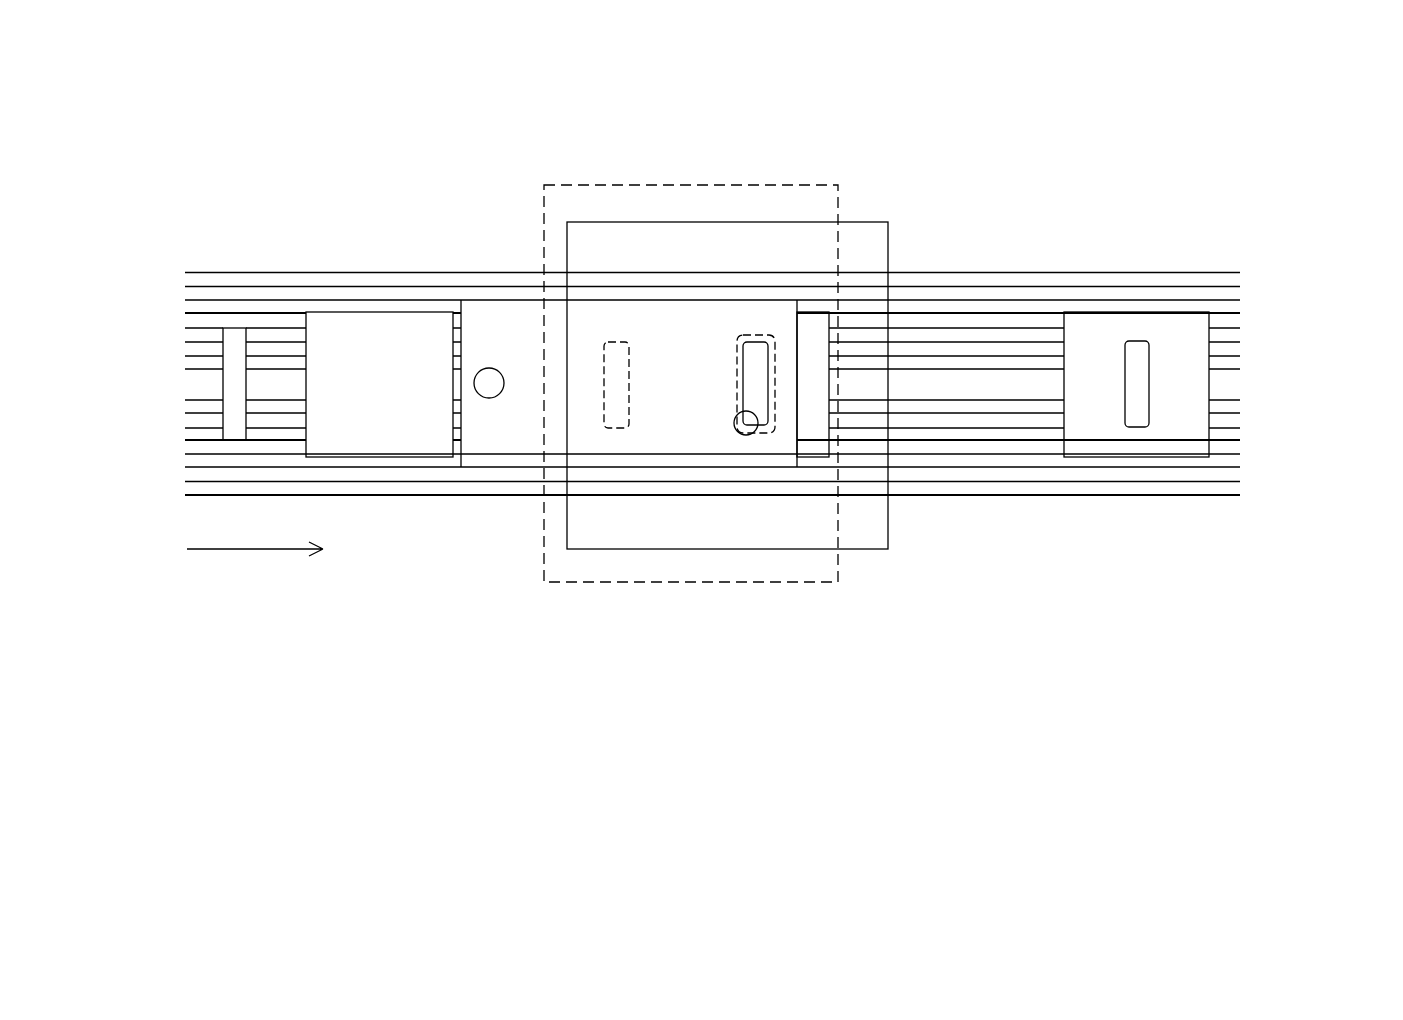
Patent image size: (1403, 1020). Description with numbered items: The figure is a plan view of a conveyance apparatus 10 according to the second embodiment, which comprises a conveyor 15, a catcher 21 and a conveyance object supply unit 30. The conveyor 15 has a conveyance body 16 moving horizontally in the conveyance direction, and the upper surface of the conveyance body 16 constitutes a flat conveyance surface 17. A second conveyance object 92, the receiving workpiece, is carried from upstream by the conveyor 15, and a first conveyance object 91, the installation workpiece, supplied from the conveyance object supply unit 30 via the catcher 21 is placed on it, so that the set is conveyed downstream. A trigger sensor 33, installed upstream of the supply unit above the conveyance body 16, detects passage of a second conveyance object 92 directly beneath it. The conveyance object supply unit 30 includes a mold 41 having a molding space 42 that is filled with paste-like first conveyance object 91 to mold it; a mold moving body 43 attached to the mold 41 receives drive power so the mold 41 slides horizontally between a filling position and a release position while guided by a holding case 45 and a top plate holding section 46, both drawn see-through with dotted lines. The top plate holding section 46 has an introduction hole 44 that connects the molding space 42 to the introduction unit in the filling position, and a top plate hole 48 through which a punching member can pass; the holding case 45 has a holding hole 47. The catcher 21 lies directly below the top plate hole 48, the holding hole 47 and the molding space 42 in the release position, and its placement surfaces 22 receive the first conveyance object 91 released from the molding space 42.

The conveyance apparatus 10 is at (1187, 95).
The conveyor 15 is at (790, 382).
The conveyance body 16 is at (1260, 263).
The conveyance surface 17 is at (1050, 299).
The catcher 21 is at (773, 339).
The placement surface 22 is at (873, 222).
The conveyance object supply unit 30 is at (691, 301).
The trigger sensor 33 is at (236, 338).
The mold 41 is at (508, 450).
The molding space 42 is at (745, 410).
The mold moving body 43 is at (496, 378).
The introduction hole 44 is at (615, 342).
The holding case 45 is at (691, 301).
The top plate holding section 46 is at (662, 110).
The holding hole 47 is at (796, 281).
The top plate hole 48 is at (775, 335).
The first conveyance object 91 is at (749, 350).
The second conveyance object 92 is at (385, 440).